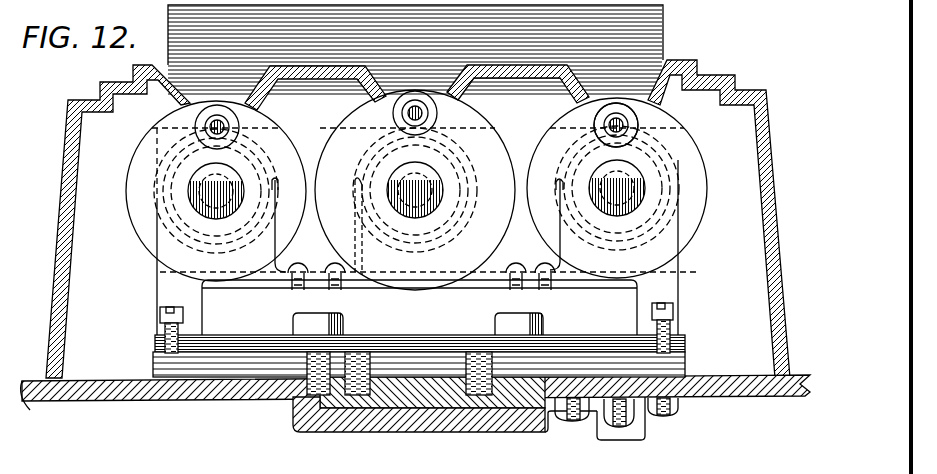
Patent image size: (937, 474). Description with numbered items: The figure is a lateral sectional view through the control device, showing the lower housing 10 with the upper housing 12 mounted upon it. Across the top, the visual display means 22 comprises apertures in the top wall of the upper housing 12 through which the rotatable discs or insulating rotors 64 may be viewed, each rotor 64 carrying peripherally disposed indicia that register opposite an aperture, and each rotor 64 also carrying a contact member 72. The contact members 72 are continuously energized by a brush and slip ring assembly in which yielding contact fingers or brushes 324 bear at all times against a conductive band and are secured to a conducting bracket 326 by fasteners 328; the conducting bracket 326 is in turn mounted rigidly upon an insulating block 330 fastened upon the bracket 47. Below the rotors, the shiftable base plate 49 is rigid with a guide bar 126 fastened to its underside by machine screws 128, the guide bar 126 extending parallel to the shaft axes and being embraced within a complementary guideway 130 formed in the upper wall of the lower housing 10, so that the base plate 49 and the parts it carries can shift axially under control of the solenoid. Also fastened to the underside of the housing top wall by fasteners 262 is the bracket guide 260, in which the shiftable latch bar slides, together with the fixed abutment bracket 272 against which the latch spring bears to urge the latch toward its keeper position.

The lower housing 10 is at (98, 394).
The upper housing 12 is at (770, 108).
The visual display means 22 is at (258, 75).
The bracket 47 is at (665, 275).
The shiftable base plate 49 is at (686, 357).
The insulating rotor 64 is at (178, 256).
The contact member 72 is at (658, 125).
The guide bar 126 is at (414, 410).
The machine screws 128 is at (500, 410).
The guideway 130 is at (293, 418).
The bracket guide 260 is at (650, 441).
The fasteners 262 is at (670, 416).
The fixed abutment bracket 272 is at (622, 425).
The contact fingers or brushes 324 is at (305, 124).
The conducting bracket 326 is at (567, 281).
The fasteners 328 is at (294, 290).
The insulating block 330 is at (226, 344).